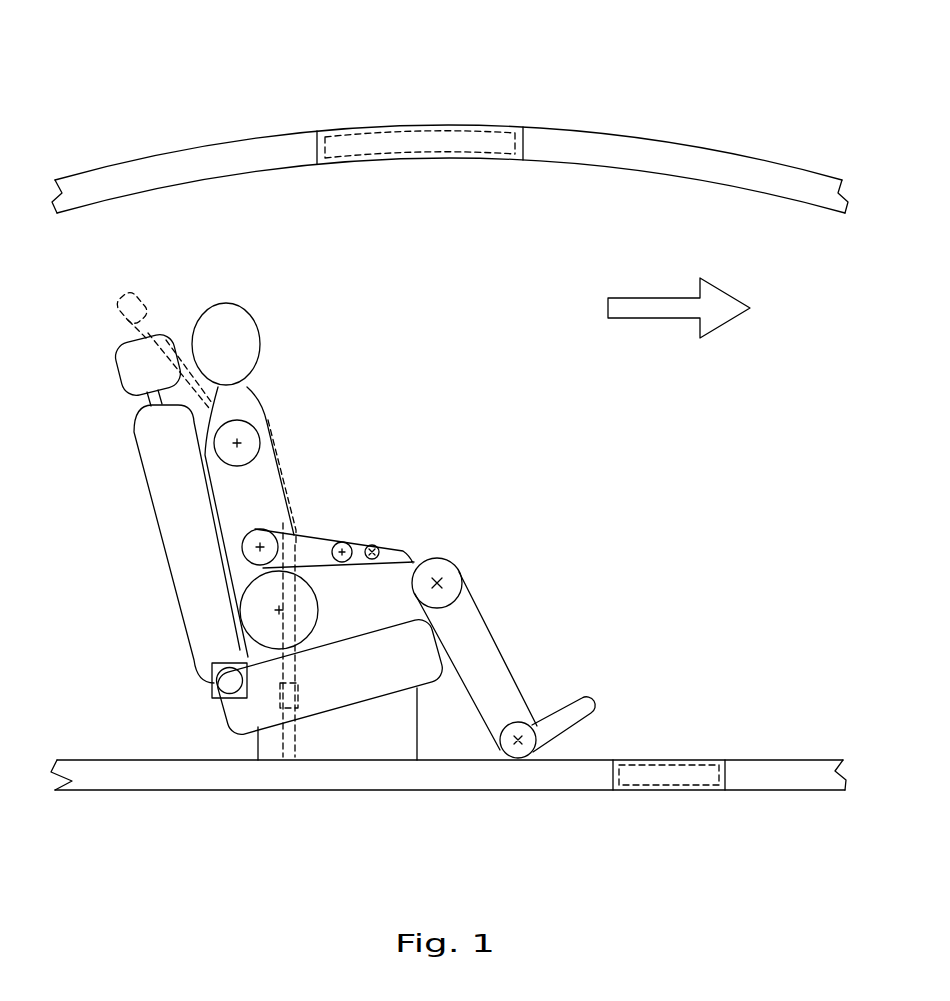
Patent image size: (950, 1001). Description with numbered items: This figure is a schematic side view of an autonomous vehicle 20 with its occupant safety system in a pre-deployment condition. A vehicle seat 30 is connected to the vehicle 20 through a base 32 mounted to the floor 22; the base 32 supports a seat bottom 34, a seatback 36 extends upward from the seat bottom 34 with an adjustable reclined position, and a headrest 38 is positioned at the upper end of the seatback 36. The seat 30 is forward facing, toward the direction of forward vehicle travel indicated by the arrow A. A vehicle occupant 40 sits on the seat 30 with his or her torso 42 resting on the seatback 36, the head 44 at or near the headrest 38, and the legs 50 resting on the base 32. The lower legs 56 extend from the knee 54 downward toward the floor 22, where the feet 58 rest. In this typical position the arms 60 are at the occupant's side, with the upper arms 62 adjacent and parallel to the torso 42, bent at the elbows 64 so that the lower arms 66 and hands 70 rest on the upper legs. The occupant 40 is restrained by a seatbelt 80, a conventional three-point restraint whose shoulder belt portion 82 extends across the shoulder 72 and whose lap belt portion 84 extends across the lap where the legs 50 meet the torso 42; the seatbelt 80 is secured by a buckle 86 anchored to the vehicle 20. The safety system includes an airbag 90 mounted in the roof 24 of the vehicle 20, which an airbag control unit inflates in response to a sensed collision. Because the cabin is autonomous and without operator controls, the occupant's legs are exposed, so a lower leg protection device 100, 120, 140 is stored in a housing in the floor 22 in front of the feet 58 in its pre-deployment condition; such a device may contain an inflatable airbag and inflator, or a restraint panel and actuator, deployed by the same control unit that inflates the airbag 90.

The autonomous vehicle 20 is at (150, 110).
The floor 22 is at (433, 768).
The roof 24 is at (565, 148).
The vehicle seat 30 is at (160, 722).
The base 32 is at (372, 738).
The seat bottom 34 is at (330, 697).
The seatback 36 is at (193, 555).
The headrest 38 is at (128, 375).
The vehicle occupant 40 is at (346, 406).
The torso 42 is at (265, 448).
The head 44 is at (235, 333).
The legs 50 is at (347, 620).
The knee 54 is at (440, 568).
The lower legs 56 is at (478, 653).
The feet 58 is at (548, 723).
The arms 60 is at (243, 500).
The upper arms 62 is at (247, 522).
The elbows 64 is at (257, 548).
The lower arms/forearms 66 is at (302, 545).
The hands 70 is at (380, 542).
The shoulder 72 is at (223, 457).
The seatbelt 80 is at (295, 505).
The shoulder belt portion 82 is at (182, 362).
The lap belt portion 84 is at (302, 612).
The buckle 86 is at (298, 692).
The airbag 90 is at (407, 133).
The lower leg protection device 100 is at (699, 694).
The lower leg protection device 120 is at (699, 694).
The lower leg protection device 140 is at (681, 712).
The arrow indicating direction of forward vehicle travel A is at (717, 308).